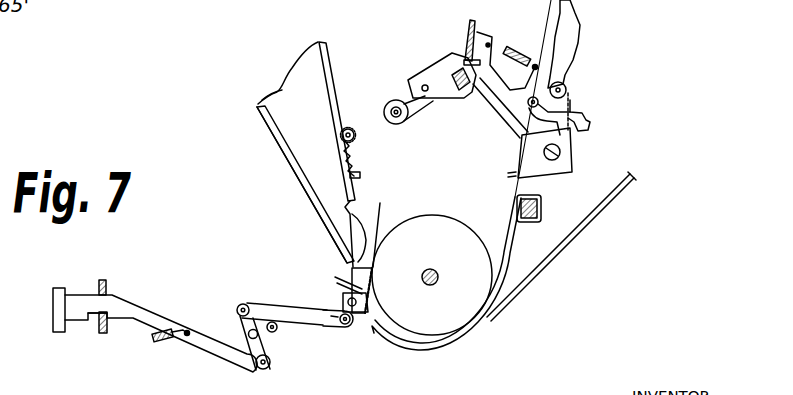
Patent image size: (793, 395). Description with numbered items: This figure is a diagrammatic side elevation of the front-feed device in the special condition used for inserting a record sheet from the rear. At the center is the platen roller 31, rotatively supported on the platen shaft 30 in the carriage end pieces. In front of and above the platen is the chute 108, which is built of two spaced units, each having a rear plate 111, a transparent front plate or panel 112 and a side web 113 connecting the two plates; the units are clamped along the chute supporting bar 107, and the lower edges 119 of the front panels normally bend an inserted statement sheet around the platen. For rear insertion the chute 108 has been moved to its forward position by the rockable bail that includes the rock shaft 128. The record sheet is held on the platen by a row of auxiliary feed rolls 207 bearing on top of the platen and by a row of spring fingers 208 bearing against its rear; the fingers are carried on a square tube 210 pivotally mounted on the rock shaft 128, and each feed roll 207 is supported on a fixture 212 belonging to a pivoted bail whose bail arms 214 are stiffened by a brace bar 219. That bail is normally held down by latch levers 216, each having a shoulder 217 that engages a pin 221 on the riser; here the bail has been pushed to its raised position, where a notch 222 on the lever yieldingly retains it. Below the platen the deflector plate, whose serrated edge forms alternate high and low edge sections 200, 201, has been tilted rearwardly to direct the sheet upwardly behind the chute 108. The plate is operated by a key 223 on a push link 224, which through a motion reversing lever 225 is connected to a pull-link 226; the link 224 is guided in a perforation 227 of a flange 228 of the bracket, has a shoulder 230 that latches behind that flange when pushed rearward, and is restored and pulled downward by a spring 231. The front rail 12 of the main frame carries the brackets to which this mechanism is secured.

The front rail 12 is at (515, 194).
The platen shaft 30 is at (421, 277).
The platen roller 31 is at (428, 216).
The chute supporting bar 107 is at (358, 119).
The chute 108 is at (293, 180).
The rear plate 111 is at (329, 76).
The front plate or panel 112 is at (280, 138).
The side web 113 is at (276, 92).
The lower edges of the front panels 119 is at (361, 260).
The rock shaft 128 is at (456, 98).
The high edge sections 200 is at (352, 270).
The low edge sections 201 is at (362, 313).
The auxiliary feed rolls 207 is at (400, 125).
The spring fingers 208 is at (497, 278).
The square tube 210 is at (540, 210).
The fixture 212 is at (450, 56).
The bail arms 214 is at (498, 108).
The latch levers 216 is at (578, 19).
The shoulder 217 is at (591, 115).
The brace bar 219 is at (479, 30).
The pin 221 is at (566, 76).
The notch 222 is at (567, 91).
The key 223 is at (55, 318).
The push link 224 is at (238, 362).
The motion reversing lever 225 is at (268, 343).
The pull-link 226 is at (292, 326).
The perforation 227 is at (110, 295).
The flange 228 is at (103, 280).
The shoulder 230 is at (110, 319).
The spring 231 is at (173, 343).